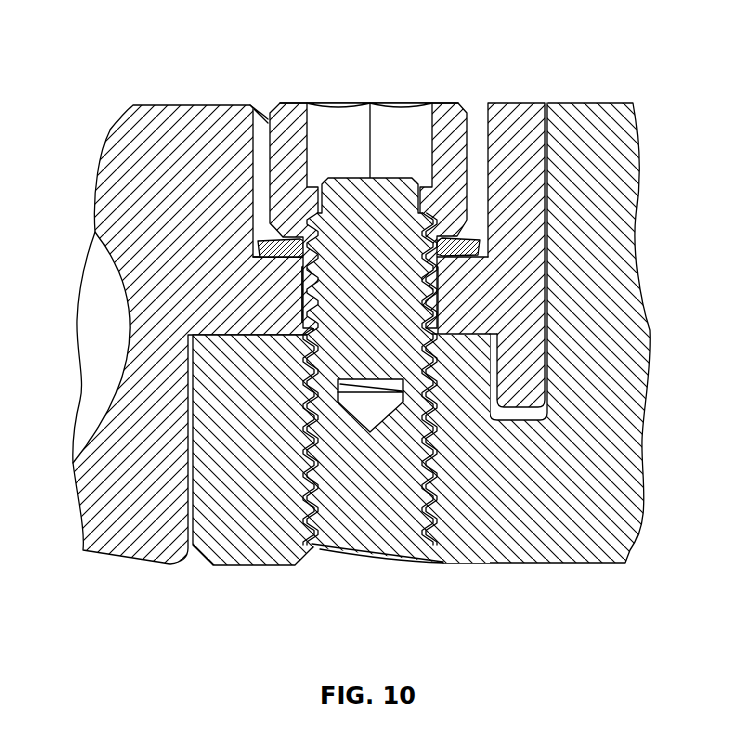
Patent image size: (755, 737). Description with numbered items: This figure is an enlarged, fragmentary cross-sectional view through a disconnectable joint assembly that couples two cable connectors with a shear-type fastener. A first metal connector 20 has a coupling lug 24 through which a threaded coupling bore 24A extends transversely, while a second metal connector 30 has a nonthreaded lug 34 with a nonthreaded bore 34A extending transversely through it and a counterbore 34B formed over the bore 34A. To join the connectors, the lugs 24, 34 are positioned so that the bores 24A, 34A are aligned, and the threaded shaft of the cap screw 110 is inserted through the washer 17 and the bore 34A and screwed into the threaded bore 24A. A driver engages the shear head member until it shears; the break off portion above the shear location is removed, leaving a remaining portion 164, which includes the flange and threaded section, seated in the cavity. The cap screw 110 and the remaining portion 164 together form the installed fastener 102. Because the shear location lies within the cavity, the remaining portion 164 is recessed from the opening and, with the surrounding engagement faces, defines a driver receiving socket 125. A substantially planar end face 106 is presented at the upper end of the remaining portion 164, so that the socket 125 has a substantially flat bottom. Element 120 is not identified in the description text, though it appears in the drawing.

The second metal connector 30 is at (212, 94).
The lug 34 is at (512, 130).
The nonthreaded bore 34A is at (440, 287).
The counterbore 34B is at (263, 116).
The first metal connector 20 is at (586, 94).
The lug 24 is at (254, 543).
The threaded coupling bore 24A is at (437, 508).
The nut 120 is at (452, 188).
The driver receiving socket 125 is at (338, 94).
The installed fastener 102 is at (385, 42).
The end face 106 is at (378, 178).
The remaining portion 164 is at (370, 331).
The cap screw 110 is at (326, 560).
The washer 17 is at (278, 256).